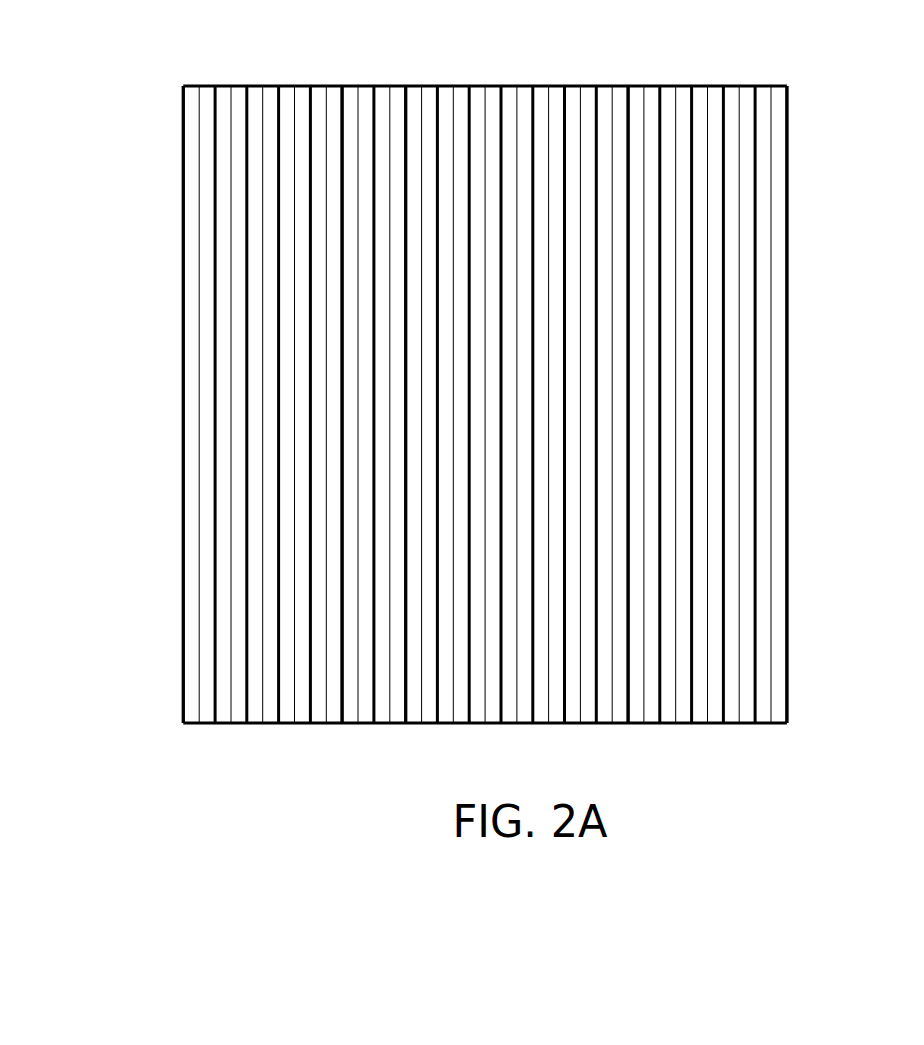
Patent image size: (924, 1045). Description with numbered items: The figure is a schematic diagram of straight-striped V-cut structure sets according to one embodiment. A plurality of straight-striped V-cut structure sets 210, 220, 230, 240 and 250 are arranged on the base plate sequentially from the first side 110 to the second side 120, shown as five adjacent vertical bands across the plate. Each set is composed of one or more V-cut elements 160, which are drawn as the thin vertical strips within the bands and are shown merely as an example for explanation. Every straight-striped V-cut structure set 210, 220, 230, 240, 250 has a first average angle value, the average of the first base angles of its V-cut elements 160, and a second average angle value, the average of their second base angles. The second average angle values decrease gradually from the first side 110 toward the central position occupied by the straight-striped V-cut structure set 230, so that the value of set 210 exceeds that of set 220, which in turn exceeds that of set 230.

The first side 110 is at (183, 352).
The second side 120 is at (788, 352).
The V-cut element 160 is at (772, 712).
The straight-striped V-cut structure set 210 is at (184, 77).
The straight-striped V-cut structure set 220 is at (406, 77).
The straight-striped V-cut structure set 230 is at (564, 77).
The straight-striped V-cut structure set 240 is at (628, 77).
The straight-striped V-cut structure set 250 is at (787, 77).